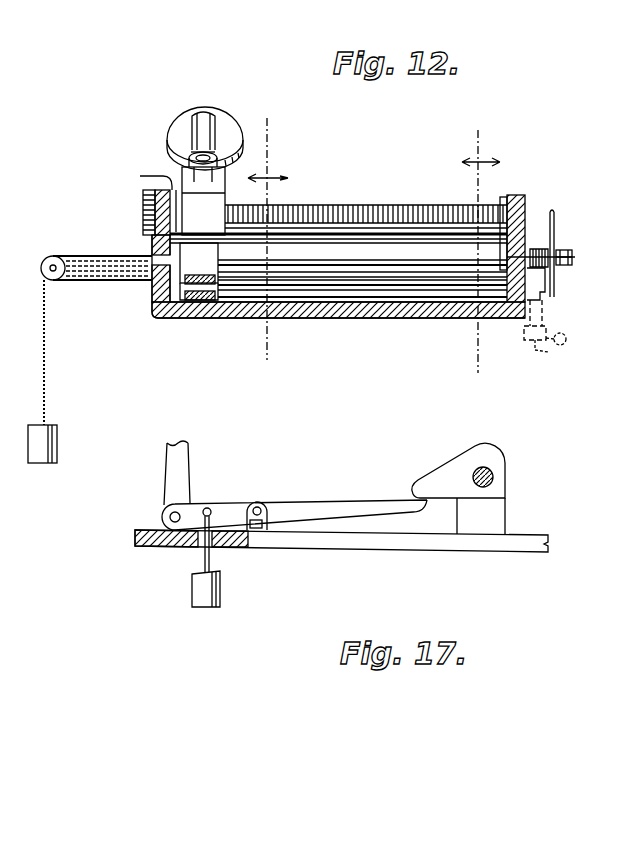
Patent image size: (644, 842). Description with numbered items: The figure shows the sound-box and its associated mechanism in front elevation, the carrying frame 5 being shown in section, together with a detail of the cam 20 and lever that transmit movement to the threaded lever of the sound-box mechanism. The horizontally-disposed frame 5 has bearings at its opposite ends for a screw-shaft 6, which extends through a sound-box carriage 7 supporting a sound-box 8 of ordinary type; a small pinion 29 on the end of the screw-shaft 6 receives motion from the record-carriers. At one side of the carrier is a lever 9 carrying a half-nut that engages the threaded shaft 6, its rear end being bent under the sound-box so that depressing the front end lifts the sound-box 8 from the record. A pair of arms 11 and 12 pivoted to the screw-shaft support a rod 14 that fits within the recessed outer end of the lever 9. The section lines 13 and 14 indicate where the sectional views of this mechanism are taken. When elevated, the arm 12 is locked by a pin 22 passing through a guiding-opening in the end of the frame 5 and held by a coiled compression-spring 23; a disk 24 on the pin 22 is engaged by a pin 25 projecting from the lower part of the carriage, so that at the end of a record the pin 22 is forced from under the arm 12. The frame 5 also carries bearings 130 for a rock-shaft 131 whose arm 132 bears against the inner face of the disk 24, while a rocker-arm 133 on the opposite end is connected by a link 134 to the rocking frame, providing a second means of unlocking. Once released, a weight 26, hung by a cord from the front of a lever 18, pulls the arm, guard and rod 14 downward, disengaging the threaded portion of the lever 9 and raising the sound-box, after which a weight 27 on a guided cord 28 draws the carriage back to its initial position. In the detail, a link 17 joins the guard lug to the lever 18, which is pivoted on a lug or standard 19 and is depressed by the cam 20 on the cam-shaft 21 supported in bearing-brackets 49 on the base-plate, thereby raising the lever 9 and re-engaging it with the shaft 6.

In FIG. 12, the frame 5 is at (348, 322).
In FIG. 12, the screw-shaft 6 is at (318, 212).
In FIG. 12, the sound-box carriage 7 is at (194, 210).
In FIG. 12, the sound-box 8 is at (225, 116).
In FIG. 12, the lever 9 is at (226, 180).
In FIG. 12, the arm 11 is at (158, 195).
In FIG. 12, the arm 12 is at (506, 196).
In FIG. 12, the section line 13 is at (267, 118).
In FIG. 12, the rod 14 is at (494, 129).
In FIG. 12, the pin 22 is at (505, 257).
In FIG. 12, the coiled compression-spring 23 is at (538, 250).
In FIG. 12, the disk 24 is at (555, 232).
In FIG. 12, the pin 25 is at (275, 270).
In FIG. 12, the weight 27 is at (57, 446).
In FIG. 12, the cord 28 is at (46, 320).
In FIG. 12, the pinion 29 is at (143, 208).
In FIG. 12, the bearings 130 is at (548, 332).
In FIG. 12, the rock-shaft 131 is at (545, 312).
In FIG. 12, the arm 132 is at (548, 290).
In FIG. 12, the rocker-arm 133 is at (548, 352).
In FIG. 12, the link 134 is at (566, 340).
In FIG. 17, the link 17 is at (167, 480).
In FIG. 17, the lever 18 is at (330, 508).
In FIG. 17, the lug or standard 19 is at (258, 503).
In FIG. 17, the block 20 is at (433, 480).
In FIG. 17, the cam-shaft 21 is at (486, 468).
In FIG. 17, the weight 26 is at (192, 596).
In FIG. 17, the bearing-brackets 49 is at (496, 515).